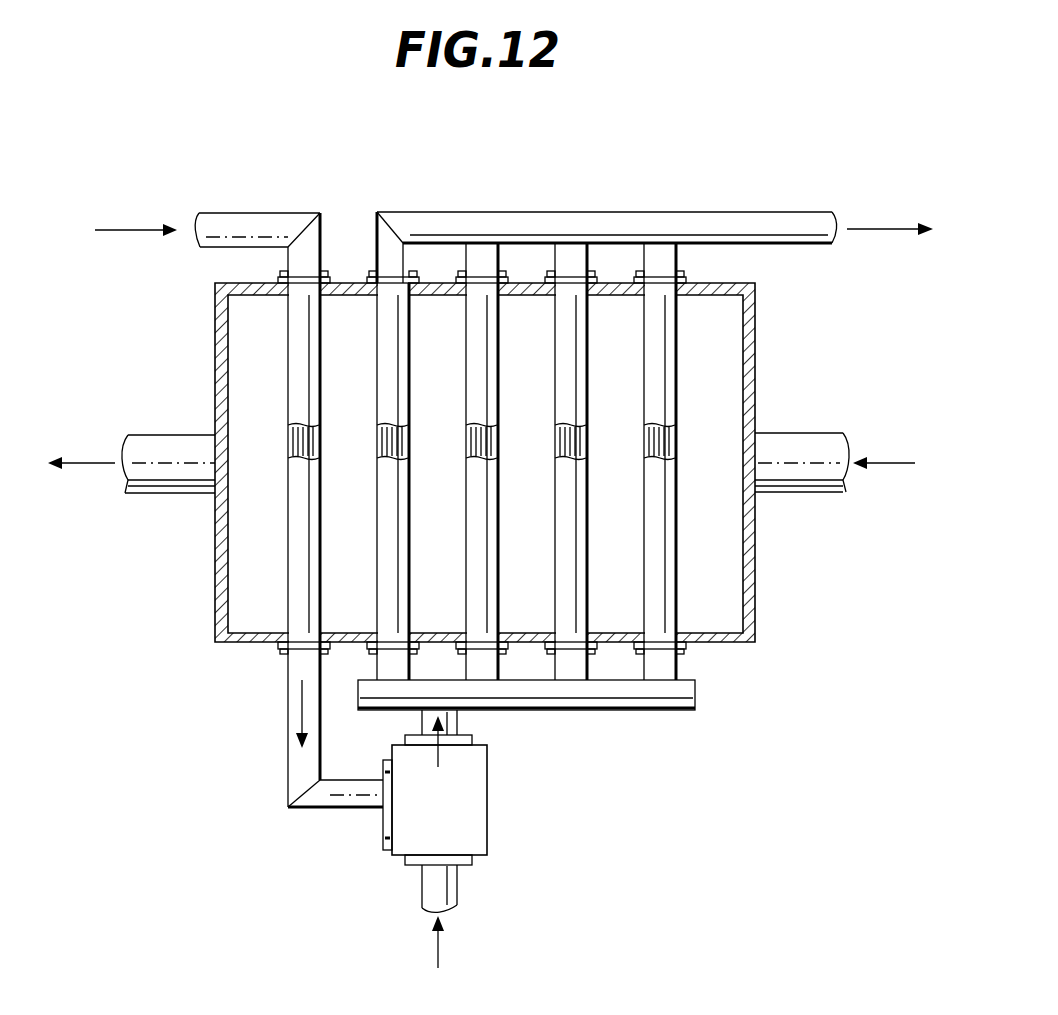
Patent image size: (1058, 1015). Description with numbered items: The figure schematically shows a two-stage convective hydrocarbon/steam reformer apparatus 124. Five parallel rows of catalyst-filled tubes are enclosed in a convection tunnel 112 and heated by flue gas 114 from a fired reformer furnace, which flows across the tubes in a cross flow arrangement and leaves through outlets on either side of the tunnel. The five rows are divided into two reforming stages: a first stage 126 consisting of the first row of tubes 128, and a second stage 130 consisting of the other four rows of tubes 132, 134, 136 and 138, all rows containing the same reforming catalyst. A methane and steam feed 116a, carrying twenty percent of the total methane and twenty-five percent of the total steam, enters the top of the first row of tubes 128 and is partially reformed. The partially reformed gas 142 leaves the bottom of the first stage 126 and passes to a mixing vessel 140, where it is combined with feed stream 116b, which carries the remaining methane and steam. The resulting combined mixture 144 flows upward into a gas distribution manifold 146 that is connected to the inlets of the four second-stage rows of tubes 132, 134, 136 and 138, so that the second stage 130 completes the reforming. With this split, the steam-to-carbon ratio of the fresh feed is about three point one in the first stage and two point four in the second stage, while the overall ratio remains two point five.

The convection tunnel 112 is at (757, 608).
The flue gas 114 is at (82, 462).
The feed 116a is at (100, 230).
The feed stream 116b is at (440, 950).
The two-stage convective hydrocarbon/steam reformer apparatus 124 is at (180, 574).
The first stage 126 is at (300, 580).
The first row of tubes 128 is at (290, 440).
The second stage 130 is at (489, 183).
The row of tubes 132 is at (388, 305).
The row of tubes 134 is at (483, 300).
The row of tubes 136 is at (570, 300).
The row of tubes 138 is at (660, 300).
The mixing vessel 140 is at (487, 832).
The partially reformed gas 142 is at (300, 710).
The combined mixture 144 is at (440, 758).
The gas distribution manifold 146 is at (692, 697).